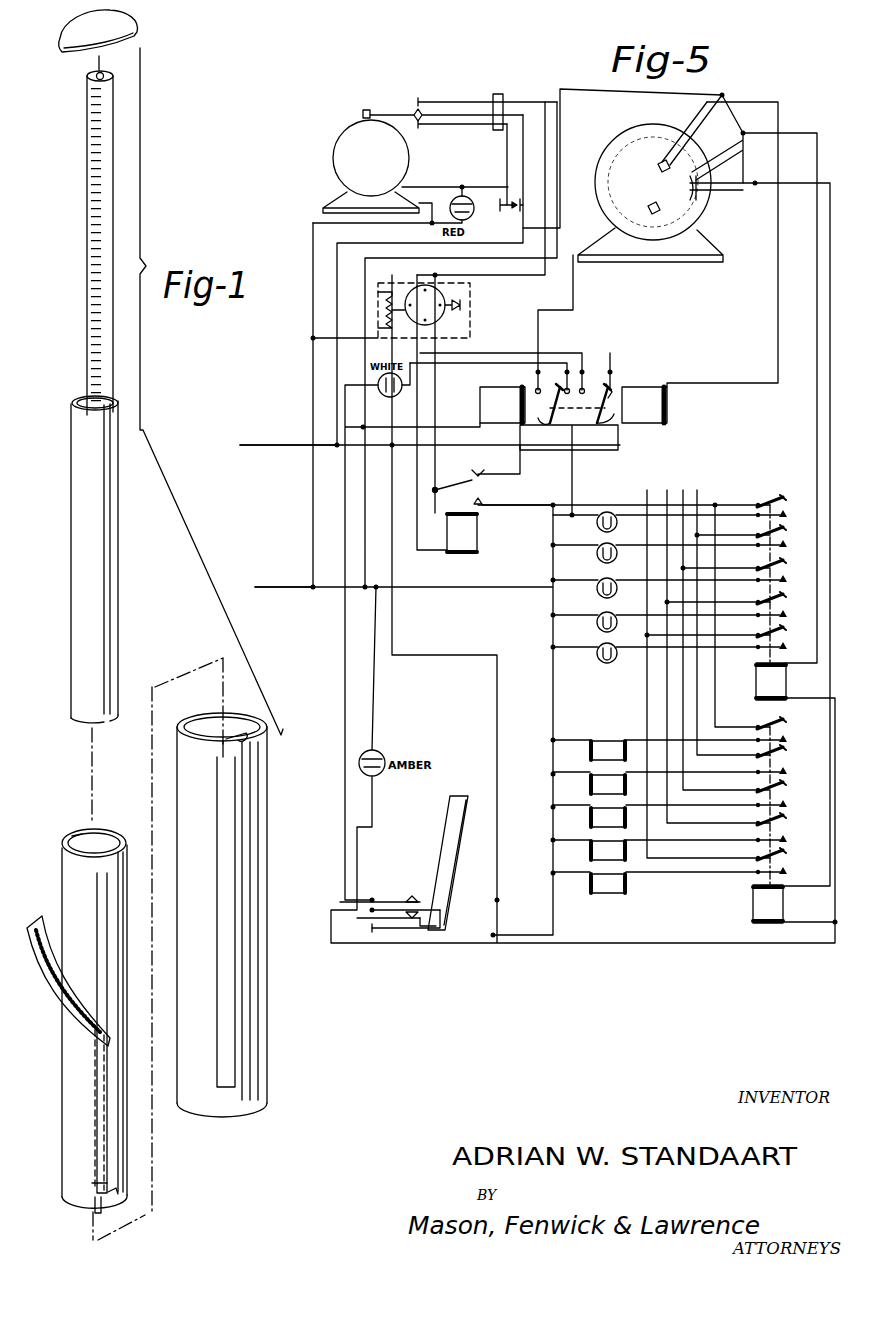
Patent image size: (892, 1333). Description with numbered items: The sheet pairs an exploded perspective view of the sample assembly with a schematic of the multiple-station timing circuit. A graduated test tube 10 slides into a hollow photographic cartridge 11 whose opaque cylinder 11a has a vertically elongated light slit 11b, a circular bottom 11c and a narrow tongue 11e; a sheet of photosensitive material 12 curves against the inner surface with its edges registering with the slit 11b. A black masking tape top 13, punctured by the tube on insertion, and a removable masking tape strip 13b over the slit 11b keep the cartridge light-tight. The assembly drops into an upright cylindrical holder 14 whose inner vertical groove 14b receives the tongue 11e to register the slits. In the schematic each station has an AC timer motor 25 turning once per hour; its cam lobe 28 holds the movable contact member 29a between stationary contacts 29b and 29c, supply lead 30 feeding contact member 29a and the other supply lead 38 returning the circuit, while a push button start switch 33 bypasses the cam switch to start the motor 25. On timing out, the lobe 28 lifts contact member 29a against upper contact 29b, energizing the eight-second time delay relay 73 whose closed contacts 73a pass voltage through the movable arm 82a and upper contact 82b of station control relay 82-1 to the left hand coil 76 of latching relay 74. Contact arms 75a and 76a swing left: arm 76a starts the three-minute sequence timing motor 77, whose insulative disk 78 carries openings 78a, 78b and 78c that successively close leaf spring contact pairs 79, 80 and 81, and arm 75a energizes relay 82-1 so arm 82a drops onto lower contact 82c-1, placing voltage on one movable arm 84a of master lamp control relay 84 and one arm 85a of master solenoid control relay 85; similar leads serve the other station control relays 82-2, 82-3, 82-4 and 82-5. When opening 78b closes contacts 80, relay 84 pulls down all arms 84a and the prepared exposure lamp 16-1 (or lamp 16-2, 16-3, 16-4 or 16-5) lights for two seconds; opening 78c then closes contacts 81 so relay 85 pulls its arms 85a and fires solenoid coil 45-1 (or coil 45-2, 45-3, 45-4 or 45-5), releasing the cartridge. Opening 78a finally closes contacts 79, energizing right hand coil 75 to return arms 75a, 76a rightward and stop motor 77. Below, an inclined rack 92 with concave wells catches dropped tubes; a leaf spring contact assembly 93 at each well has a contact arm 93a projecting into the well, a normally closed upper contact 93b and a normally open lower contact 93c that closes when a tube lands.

In FIG. 1, the test tube 10 is at (87, 186).
In FIG. 1, the photographic cartridge 11 is at (103, 1027).
In FIG. 1, the opaque cylinder 11a is at (70, 838).
In FIG. 1, the light slit 11b is at (92, 1183).
In FIG. 1, the circular bottom 11c is at (96, 1214).
In FIG. 1, the tongue 11e is at (120, 1190).
In FIG. 1, the sheet of photosensitive material 12 is at (71, 444).
In FIG. 1, the masking tape top 13 is at (58, 34).
In FIG. 1, the removable masking tape strip 13b is at (44, 1016).
In FIG. 1, the cylindrical holder 14 is at (242, 915).
In FIG. 1, the vertical groove 14b is at (246, 737).
In FIG. 5, the AC timer motor 25 is at (332, 177).
In FIG. 5, the raised lobe 28 is at (362, 115).
In FIG. 5, the movable contact member 29a is at (378, 110).
In FIG. 5, the upper stationary contact 29b is at (448, 100).
In FIG. 5, the lower stationary contact 29c is at (476, 126).
In FIG. 5, the supply lead 30 is at (250, 445).
In FIG. 5, the push button start switch 33 is at (510, 214).
In FIG. 5, the supply lead 38 is at (274, 587).
In FIG. 5, the solenoid coil 45-1 is at (606, 740).
In FIG. 5, the solenoid coil 45-2 is at (588, 778).
In FIG. 5, the solenoid coil 45-3 is at (588, 816).
In FIG. 5, the solenoid coil 45-4 is at (588, 850).
In FIG. 5, the solenoid coil 45-5 is at (588, 876).
In FIG. 5, the exposure lamp 16-1 is at (598, 528).
In FIG. 5, the exposure lamp 16-2 is at (598, 560).
In FIG. 5, the exposure lamp 16-3 is at (598, 595).
In FIG. 5, the exposure lamp 16-4 is at (598, 629).
In FIG. 5, the exposure lamp 16-5 is at (602, 662).
In FIG. 5, the time delay relay 73 is at (470, 292).
In FIG. 5, the time delay relay contacts 73a is at (464, 308).
In FIG. 5, the latching relay 74 is at (607, 449).
In FIG. 5, the right hand coil 75 is at (644, 405).
In FIG. 5, the latching relay contact arm 75a is at (597, 416).
In FIG. 5, the left hand coil 76 is at (502, 405).
In FIG. 5, the left hand movable contact 76a is at (548, 416).
In FIG. 5, the sequence timing motor assembly 77 is at (612, 136).
In FIG. 5, the insulative disk 78 is at (632, 130).
In FIG. 5, the disk opening 78a is at (660, 166).
In FIG. 5, the disk opening 78b is at (690, 194).
In FIG. 5, the disk opening 78c is at (658, 212).
In FIG. 5, the contact members 79 is at (690, 114).
In FIG. 5, the contact members 80 is at (714, 150).
In FIG. 5, the contact members 81 is at (742, 192).
In FIG. 5, the movable contact arm 82a is at (464, 488).
In FIG. 5, the upper stationary contact 82b is at (488, 465).
In FIG. 5, the lower stationary contact 82c-1 is at (490, 506).
In FIG. 5, the station control relay 82-1 is at (476, 556).
In FIG. 5, the station control relay 82-2 is at (692, 500).
In FIG. 5, the station control relay 82-3 is at (683, 492).
In FIG. 5, the station control relay 82-4 is at (666, 488).
In FIG. 5, the station control relay 82-5 is at (648, 490).
In FIG. 5, the master lamp control relay 84 is at (771, 681).
In FIG. 5, the movable contact arms 84a is at (778, 498).
In FIG. 5, the master solenoid control relay 85 is at (768, 904).
In FIG. 5, the movable contact arms 85a is at (764, 724).
In FIG. 5, the inclined rack 92 is at (476, 808).
In FIG. 5, the leaf spring contact assembly 93 is at (393, 906).
In FIG. 5, the contact arm 93a is at (434, 930).
In FIG. 5, the upper contact 93b is at (400, 896).
In FIG. 5, the lower contact 93c is at (400, 930).